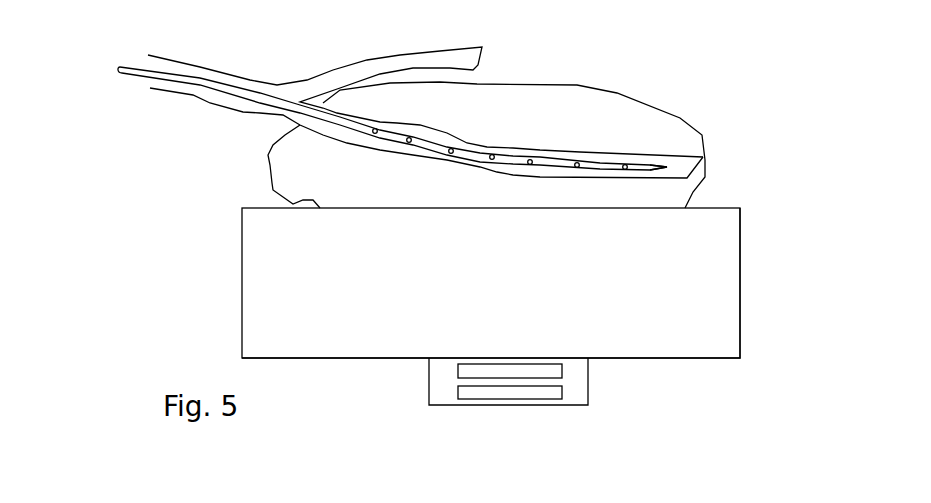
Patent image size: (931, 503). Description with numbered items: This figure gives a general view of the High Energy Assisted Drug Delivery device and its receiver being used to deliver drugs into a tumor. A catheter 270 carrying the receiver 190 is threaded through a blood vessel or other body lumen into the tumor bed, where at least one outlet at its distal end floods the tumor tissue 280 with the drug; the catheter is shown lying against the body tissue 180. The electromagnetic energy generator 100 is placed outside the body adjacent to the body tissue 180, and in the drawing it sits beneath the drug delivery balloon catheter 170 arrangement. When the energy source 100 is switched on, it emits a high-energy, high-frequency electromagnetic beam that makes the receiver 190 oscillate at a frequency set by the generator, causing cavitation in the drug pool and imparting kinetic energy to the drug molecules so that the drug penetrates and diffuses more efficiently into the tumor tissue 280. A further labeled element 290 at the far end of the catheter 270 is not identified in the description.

The electromagnetic energy generator 100 is at (452, 368).
The drug delivery balloon catheter 170 is at (302, 310).
The body tissue 180 is at (657, 328).
The receiver 190 is at (463, 152).
The catheter 270 is at (157, 77).
The tumor tissue 280 is at (332, 172).
The distal end 290 is at (625, 167).